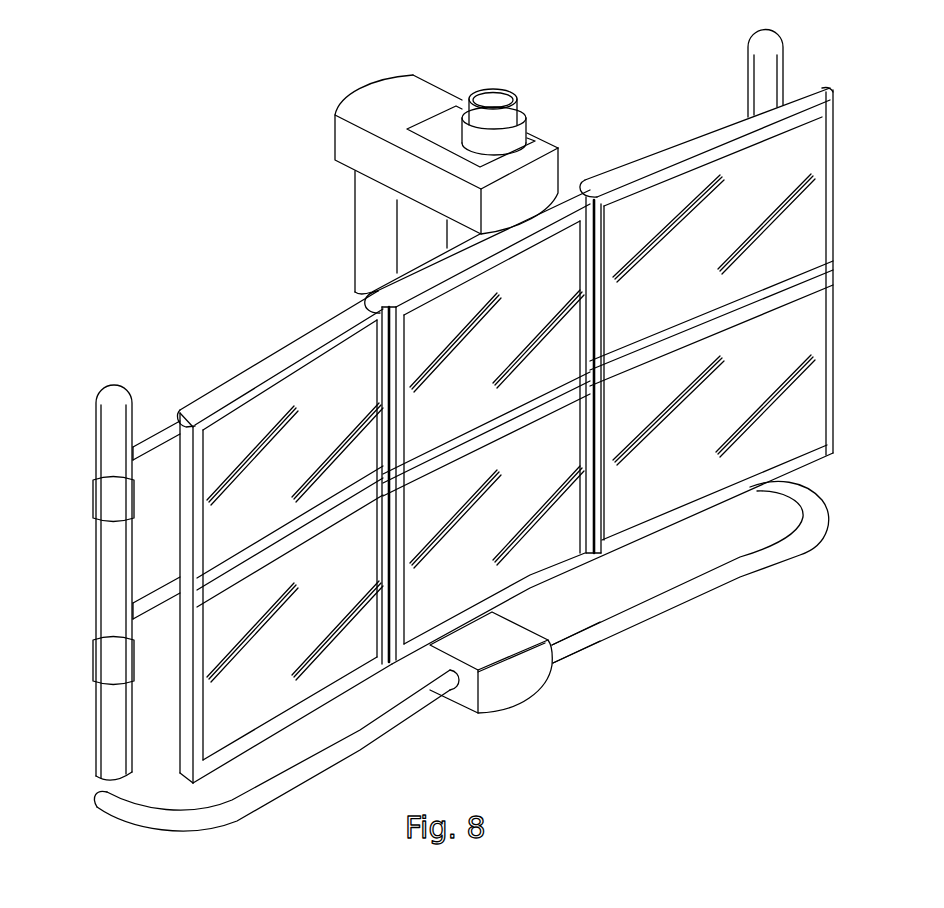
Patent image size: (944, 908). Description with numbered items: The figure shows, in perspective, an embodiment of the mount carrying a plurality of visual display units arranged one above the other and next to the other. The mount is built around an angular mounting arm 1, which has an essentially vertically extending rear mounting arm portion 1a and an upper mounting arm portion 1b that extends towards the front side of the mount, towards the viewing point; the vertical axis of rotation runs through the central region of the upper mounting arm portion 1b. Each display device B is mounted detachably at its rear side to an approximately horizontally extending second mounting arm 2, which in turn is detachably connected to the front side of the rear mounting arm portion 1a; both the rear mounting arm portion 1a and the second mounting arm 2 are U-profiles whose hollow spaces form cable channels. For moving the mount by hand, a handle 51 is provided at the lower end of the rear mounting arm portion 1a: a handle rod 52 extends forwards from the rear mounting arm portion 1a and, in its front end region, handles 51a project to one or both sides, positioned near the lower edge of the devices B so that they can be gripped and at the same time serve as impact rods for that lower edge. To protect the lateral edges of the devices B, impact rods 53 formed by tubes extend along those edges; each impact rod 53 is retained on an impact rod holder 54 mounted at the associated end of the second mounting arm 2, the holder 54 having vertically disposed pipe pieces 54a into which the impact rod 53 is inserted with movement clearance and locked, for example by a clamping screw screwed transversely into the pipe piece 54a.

The mounting arm 1 is at (352, 182).
The rear mounting arm portion 1a is at (352, 237).
The upper mounting arm portion 1b is at (555, 133).
The second mounting arm 2 is at (170, 428).
The display device B is at (368, 297).
The handle 51 is at (505, 707).
The handle 51a is at (600, 632).
The handle rod 52 is at (501, 648).
The impact rod 53 is at (97, 420).
The impact rod holder 54 is at (147, 437).
The pipe piece 54a is at (95, 500).